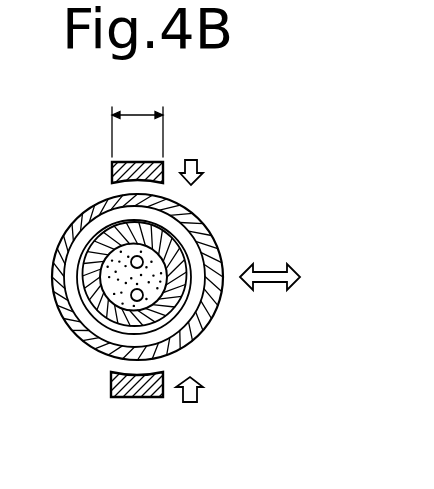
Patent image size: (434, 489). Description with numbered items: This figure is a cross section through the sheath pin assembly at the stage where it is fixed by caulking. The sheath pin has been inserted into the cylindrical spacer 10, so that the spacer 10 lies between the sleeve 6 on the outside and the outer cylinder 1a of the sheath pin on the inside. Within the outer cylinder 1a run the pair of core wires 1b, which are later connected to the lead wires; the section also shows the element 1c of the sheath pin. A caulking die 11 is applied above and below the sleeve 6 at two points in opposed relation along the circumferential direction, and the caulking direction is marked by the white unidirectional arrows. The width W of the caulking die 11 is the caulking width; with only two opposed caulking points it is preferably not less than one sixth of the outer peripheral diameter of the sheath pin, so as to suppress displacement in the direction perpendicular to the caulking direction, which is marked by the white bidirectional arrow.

The sleeve 6 is at (187, 219).
The spacer 10 is at (190, 256).
The outer cylinder 1a is at (170, 293).
The core wire 1b is at (133, 297).
The inner layer 1c is at (183, 301).
The caulking die 11 is at (121, 170).
The width of the caulking die W is at (136, 113).